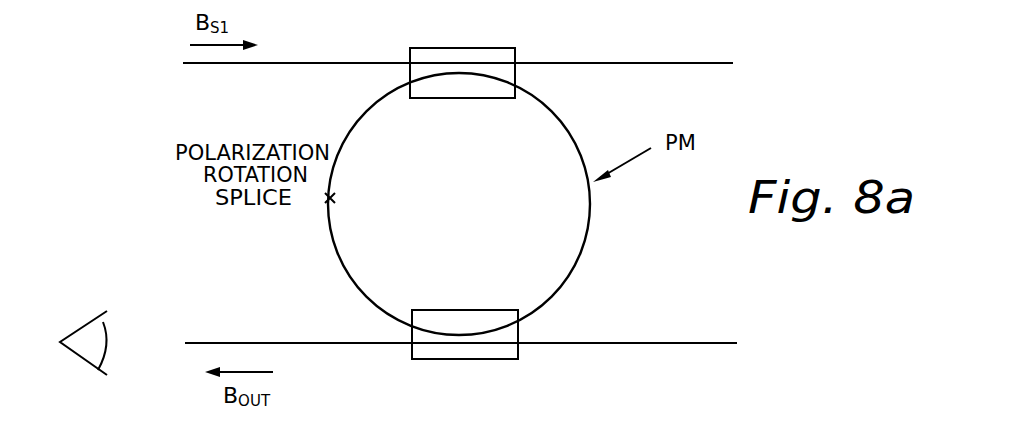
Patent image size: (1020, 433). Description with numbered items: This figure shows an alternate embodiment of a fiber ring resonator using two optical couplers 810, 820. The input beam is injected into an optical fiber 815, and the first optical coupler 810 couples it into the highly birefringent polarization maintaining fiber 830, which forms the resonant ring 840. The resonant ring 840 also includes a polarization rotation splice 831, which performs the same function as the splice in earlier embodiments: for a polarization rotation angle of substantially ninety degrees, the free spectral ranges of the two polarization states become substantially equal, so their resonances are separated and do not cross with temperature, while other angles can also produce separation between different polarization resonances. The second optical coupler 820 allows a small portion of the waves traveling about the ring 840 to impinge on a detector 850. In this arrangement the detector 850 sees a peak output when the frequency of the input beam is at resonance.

The optical coupler 810 is at (478, 46).
The optical fiber 815 is at (212, 343).
The optical coupler 820 is at (498, 360).
The highly birefringent polarization maintaining fiber 830 is at (588, 230).
The polarization rotation splice 831 is at (345, 200).
The resonant ring 840 is at (528, 186).
The detector 850 is at (78, 332).